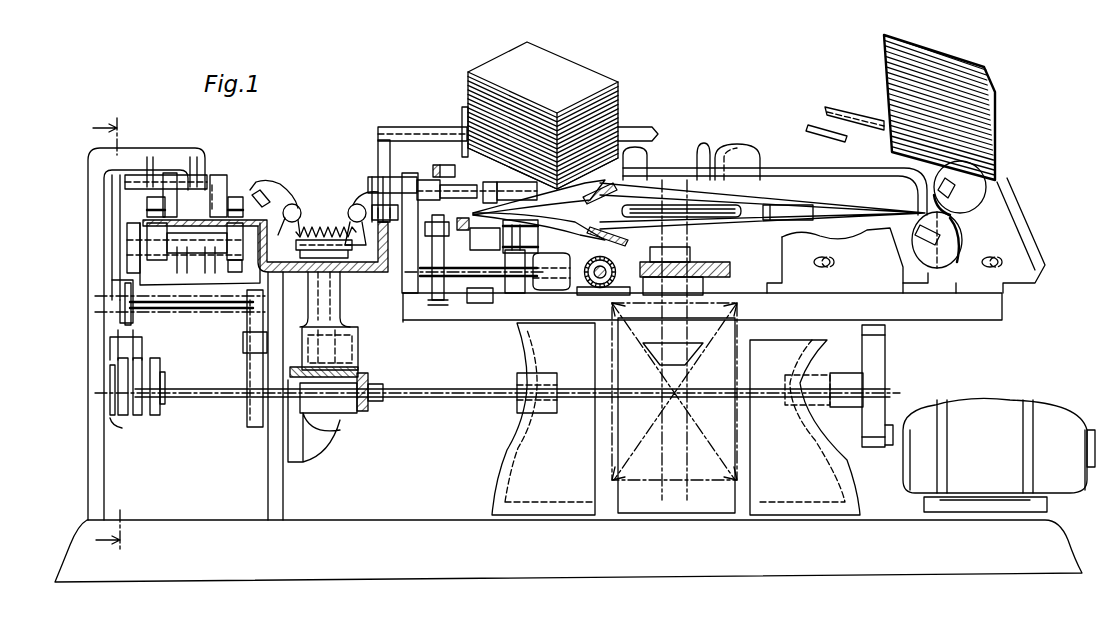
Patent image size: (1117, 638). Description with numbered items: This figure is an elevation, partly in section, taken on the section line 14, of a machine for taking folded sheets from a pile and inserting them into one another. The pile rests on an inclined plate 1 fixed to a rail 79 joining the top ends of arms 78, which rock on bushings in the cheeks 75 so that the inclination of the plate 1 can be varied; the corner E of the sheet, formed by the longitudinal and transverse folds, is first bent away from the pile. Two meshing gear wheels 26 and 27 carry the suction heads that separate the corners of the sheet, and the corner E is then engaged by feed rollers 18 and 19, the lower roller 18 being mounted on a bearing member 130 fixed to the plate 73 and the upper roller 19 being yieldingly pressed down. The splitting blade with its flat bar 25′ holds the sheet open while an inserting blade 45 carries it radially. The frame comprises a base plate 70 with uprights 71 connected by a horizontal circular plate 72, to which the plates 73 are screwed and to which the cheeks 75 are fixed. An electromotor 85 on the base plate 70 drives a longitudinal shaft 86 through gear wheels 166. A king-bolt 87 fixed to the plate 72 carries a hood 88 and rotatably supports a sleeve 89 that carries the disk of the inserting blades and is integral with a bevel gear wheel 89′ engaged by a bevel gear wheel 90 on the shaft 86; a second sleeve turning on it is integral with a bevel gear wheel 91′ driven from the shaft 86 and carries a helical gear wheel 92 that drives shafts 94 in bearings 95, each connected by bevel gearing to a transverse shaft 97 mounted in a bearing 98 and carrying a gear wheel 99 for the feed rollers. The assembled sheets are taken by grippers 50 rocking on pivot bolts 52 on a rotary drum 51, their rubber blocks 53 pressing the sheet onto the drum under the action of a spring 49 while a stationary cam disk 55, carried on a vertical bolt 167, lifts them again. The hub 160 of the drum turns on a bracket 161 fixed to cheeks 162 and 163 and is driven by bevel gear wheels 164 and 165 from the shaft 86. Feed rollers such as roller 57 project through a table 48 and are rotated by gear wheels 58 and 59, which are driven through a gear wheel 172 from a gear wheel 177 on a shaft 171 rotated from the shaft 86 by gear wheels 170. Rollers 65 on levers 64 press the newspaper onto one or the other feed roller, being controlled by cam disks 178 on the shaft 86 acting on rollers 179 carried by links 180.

The inclined plate 1 is at (462, 112).
The section line 14 is at (120, 335).
The feed roller 18 is at (540, 248).
The feed roller 19 is at (505, 184).
The flat bar of the splitting blade 25′ is at (768, 240).
The gear wheel 26 is at (948, 262).
The gear wheel 27 is at (985, 190).
The inserting blade 45 is at (642, 208).
The table 48 is at (105, 226).
The spring 49 is at (326, 220).
The gripper 50 is at (363, 192).
The rotary drum 51 is at (290, 272).
The pivot bolt 52 is at (297, 207).
The block 53 is at (256, 182).
The cam disk 55 is at (308, 225).
The feed roller 57 is at (234, 273).
The gear wheel 58 is at (127, 245).
The gear wheel 59 is at (141, 248).
The lever 64 is at (216, 175).
The roller 65 is at (147, 205).
The base plate 70 is at (568, 551).
The upright 71 is at (551, 461).
The horizontal circular plate 72 is at (541, 419).
The plate 73 is at (1000, 303).
The cheek 75 is at (402, 262).
The arm 78 is at (375, 150).
The rail 79 is at (645, 127).
The electromotor 85 is at (1012, 405).
The shaft 86 is at (420, 398).
The king-bolt 87 is at (655, 350).
The hood 88 is at (704, 160).
The sleeve 89 is at (690, 255).
The bevel gear wheel 89′ is at (755, 328).
The bevel gear wheel 90 is at (711, 471).
The bevel gear wheel 91′ is at (755, 307).
The helical gear wheel 92 is at (730, 270).
The shaft 94 is at (598, 295).
The bearing 95 is at (612, 262).
The transverse shaft 97 is at (520, 295).
The bearing 98 is at (555, 292).
The gear wheel 99 is at (438, 305).
The bearing member 130 is at (482, 303).
The hub 160 is at (340, 303).
The bracket 161 is at (322, 440).
The cheek 162 is at (283, 490).
The cheek 163 is at (98, 458).
The bevel gear wheel 164 is at (360, 373).
The bevel gear wheel 165 is at (360, 413).
The gear wheels 166 is at (876, 400).
The vertical bolt 167 is at (332, 330).
The gear wheels 170 is at (258, 385).
The shaft 171 is at (206, 312).
The gear wheel 172 is at (118, 280).
The gear wheel 177 is at (138, 318).
The cam disk 178 is at (125, 428).
The roller 179 is at (110, 372).
The link 180 is at (117, 317).
The corner of the sheet E is at (557, 113).